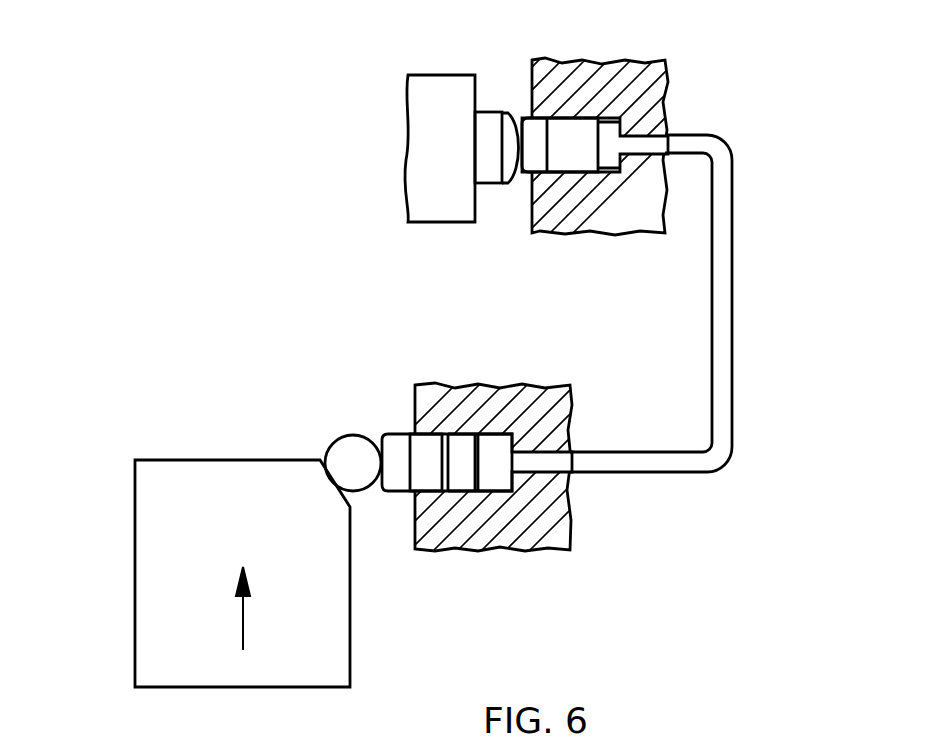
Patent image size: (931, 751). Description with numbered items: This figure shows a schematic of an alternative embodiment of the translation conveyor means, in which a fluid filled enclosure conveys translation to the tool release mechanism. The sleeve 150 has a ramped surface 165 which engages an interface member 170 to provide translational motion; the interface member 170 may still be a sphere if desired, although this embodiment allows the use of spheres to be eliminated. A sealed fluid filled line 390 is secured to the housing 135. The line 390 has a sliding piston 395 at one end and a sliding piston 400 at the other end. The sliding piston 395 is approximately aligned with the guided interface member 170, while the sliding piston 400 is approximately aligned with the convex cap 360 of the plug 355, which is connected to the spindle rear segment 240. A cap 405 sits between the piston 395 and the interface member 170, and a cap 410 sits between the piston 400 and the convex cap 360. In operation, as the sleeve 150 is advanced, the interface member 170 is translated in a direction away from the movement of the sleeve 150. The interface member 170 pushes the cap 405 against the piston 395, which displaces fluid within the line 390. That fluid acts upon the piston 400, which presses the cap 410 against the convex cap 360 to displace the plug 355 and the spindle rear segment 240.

The housing 135 is at (632, 64).
The sleeve 150 is at (165, 520).
The ramped surface 165 is at (340, 495).
The interface member 170 is at (347, 450).
The spindle rear segment 240 is at (430, 142).
The plug 355 is at (486, 120).
The convex cap 360 is at (512, 118).
The sealed fluid filled line 390 is at (720, 273).
The sliding piston 395 is at (463, 444).
The sliding piston 400 is at (575, 130).
The cap 405 is at (403, 452).
The cap 410 is at (525, 172).